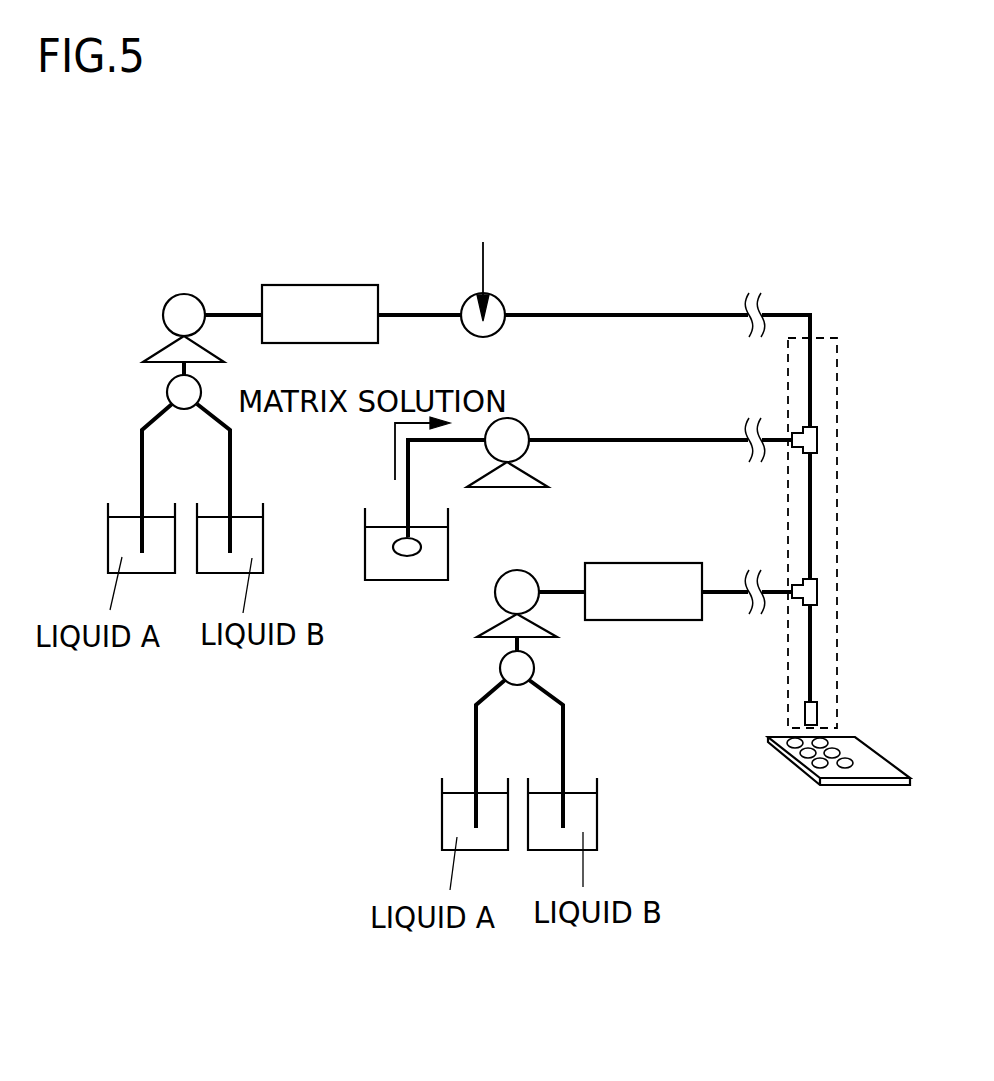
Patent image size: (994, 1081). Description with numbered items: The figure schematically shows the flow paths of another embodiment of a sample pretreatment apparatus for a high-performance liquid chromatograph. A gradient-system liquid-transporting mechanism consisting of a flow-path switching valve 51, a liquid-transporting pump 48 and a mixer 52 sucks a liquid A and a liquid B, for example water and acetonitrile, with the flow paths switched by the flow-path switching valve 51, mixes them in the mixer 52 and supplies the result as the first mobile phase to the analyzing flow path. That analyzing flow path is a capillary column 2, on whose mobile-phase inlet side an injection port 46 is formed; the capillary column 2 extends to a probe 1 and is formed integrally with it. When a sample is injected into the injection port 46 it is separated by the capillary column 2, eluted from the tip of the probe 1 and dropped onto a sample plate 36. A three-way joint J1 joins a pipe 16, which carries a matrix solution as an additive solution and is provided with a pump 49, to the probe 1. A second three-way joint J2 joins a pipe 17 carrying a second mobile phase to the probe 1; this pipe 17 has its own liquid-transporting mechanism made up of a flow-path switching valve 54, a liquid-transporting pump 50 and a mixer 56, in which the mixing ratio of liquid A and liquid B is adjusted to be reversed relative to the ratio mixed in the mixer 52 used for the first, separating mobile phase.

The probe 1 is at (838, 378).
The capillary column 2 is at (673, 313).
The pipe 16 is at (612, 438).
The pipe 17 is at (722, 594).
The sample plate 36 is at (823, 770).
The injection port 46 is at (493, 313).
The liquid-transporting pump 48 is at (186, 303).
The pump 49 is at (513, 433).
The liquid-transporting pump 50 is at (522, 578).
The flow-path switching valve 51 is at (183, 392).
The mixer 52 is at (290, 285).
The flow-path switching valve 54 is at (515, 668).
The mixer 56 is at (613, 562).
The three-way joint J1 is at (817, 443).
The three-way joint J2 is at (817, 592).